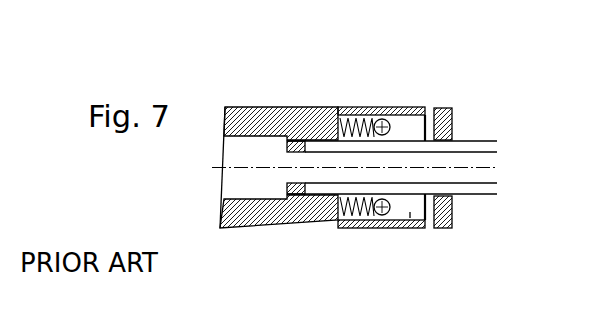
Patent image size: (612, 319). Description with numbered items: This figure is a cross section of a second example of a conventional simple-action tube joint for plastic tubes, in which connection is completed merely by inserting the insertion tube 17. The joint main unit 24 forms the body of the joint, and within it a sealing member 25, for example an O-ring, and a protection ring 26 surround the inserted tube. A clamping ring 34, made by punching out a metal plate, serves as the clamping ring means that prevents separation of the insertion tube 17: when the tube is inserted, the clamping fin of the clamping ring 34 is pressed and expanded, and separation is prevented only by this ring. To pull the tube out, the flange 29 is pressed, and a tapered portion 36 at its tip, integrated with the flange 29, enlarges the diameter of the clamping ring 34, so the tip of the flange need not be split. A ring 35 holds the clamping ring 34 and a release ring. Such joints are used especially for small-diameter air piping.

The insertion tube 17 is at (490, 140).
The joint main unit 24 is at (302, 105).
The sealing member 25 is at (357, 105).
The protection ring 26 is at (380, 105).
The flange 29 is at (453, 112).
The clamping ring 34 is at (410, 105).
The ring to hold the clamping ring and a release ring 35 is at (417, 230).
The tapered portion 36 is at (382, 227).